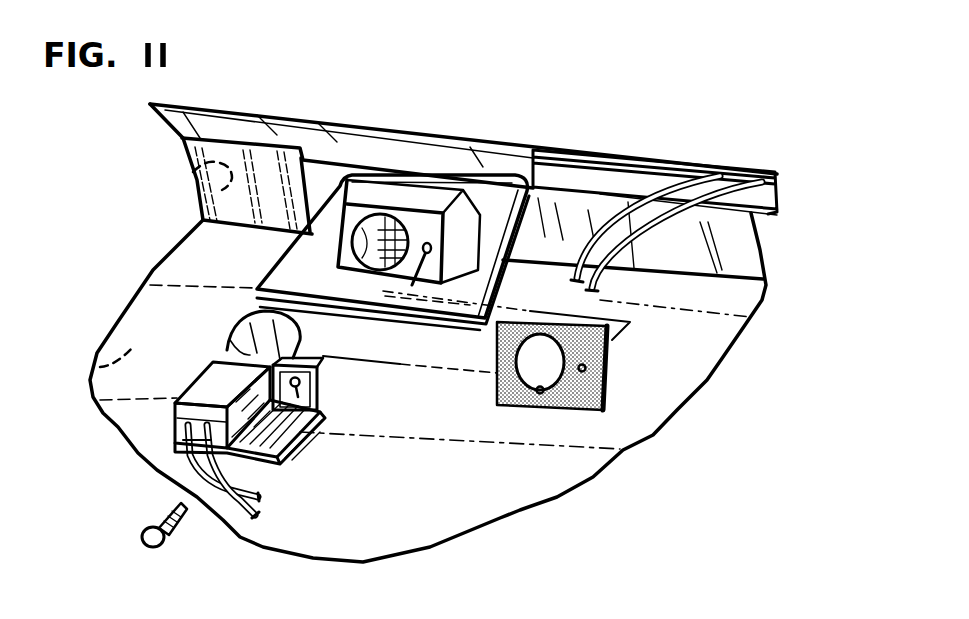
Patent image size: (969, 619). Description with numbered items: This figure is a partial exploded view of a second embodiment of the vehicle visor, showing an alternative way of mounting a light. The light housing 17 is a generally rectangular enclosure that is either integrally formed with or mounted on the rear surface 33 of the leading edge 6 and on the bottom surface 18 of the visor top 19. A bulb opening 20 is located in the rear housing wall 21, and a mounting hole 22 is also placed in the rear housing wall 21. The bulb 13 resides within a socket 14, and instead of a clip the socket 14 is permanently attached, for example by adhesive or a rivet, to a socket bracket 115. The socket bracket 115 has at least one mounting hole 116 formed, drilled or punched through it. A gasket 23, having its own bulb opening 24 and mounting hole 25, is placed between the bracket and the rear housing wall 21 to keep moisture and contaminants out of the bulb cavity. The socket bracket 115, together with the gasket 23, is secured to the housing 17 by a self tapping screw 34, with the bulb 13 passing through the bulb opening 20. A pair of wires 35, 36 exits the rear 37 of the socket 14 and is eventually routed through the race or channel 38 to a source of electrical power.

The leading edge 6 is at (188, 174).
The bulb 13 is at (253, 335).
The socket 14 is at (210, 388).
The light housing 17 is at (400, 193).
The bottom surface 18 is at (150, 305).
The visor top 19 is at (97, 360).
The bulb opening 20 is at (367, 262).
The rear housing wall 21 is at (423, 278).
The mounting hole 22 is at (432, 247).
The gasket 23 is at (500, 394).
The bulb opening 24 is at (543, 392).
The mounting hole 25 is at (586, 372).
The rear surface 33 is at (748, 267).
The self tapping screw 34 is at (167, 547).
The wire 35 is at (637, 232).
The wire 36 is at (606, 217).
The rear 37 is at (183, 424).
The race or channel 38 is at (775, 213).
The socket bracket 115 is at (290, 437).
The mounting hole 116 is at (327, 393).